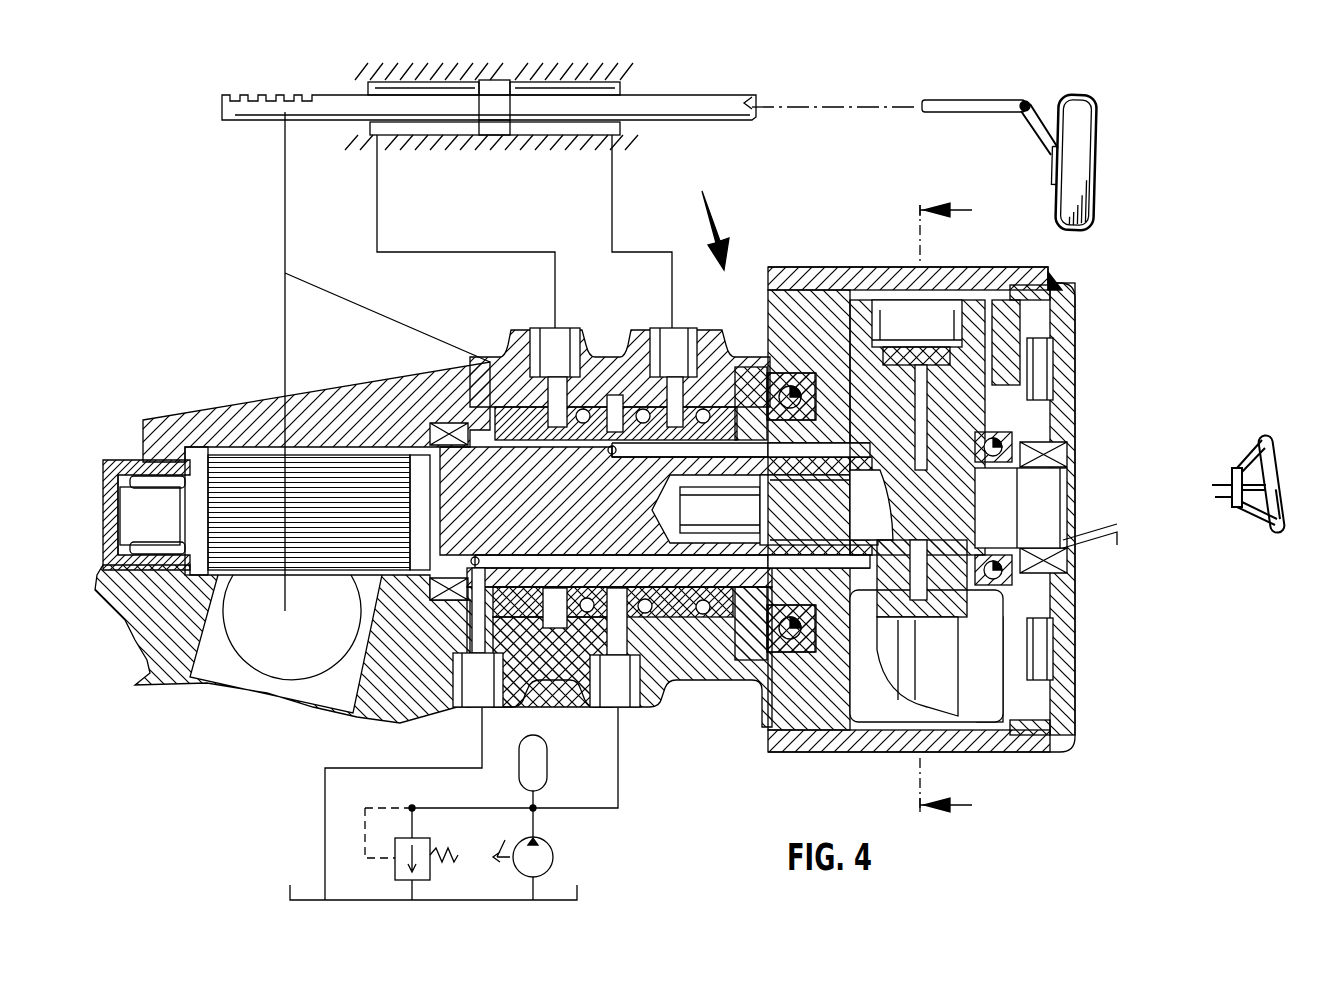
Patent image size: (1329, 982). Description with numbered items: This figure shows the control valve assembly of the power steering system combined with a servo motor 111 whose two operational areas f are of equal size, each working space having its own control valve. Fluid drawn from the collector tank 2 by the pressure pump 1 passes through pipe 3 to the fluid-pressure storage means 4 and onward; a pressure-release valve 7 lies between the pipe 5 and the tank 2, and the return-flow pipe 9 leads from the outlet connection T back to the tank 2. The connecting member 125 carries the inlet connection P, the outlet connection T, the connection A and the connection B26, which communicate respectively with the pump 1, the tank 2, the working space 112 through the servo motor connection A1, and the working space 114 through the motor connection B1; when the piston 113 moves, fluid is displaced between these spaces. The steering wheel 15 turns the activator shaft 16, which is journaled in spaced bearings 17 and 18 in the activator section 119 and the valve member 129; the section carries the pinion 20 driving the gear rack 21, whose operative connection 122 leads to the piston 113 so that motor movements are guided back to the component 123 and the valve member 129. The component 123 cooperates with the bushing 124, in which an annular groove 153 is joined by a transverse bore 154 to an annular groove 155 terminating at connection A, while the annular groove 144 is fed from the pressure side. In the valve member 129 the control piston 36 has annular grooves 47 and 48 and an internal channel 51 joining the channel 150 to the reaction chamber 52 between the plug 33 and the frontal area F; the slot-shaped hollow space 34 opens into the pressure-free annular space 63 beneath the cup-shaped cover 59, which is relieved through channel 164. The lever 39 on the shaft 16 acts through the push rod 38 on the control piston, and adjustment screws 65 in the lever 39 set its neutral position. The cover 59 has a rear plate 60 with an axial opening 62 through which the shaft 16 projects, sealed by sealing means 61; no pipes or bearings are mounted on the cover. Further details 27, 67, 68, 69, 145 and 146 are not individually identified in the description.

The servo motor 111 is at (608, 48).
The working space 112 is at (618, 86).
The piston 113 is at (504, 60).
The working space 114 is at (365, 85).
The fixed guide f is at (466, 80).
The lower support pad B1 is at (380, 138).
The connection means A1 is at (626, 134).
The operative connection 122 is at (283, 157).
The bushing 124 is at (513, 420).
The activator section 119 is at (590, 477).
The connecting member 125 is at (627, 380).
The connection means B26 is at (563, 361).
The annular groove 155 is at (662, 365).
The connection means A is at (700, 350).
The transverse bore 154 is at (697, 380).
The annular groove 153 is at (700, 407).
The channel 150 is at (770, 370).
The bearing ring 27 is at (780, 410).
The cover 59 is at (805, 375).
The annular groove 47 is at (883, 423).
The reaction chamber 52 is at (900, 400).
The plug 33 is at (908, 395).
The pipe 5 is at (953, 498).
The frontal area F is at (937, 390).
The rear plate 60 is at (1063, 328).
The control piston 36 is at (960, 412).
The channel 51 is at (930, 425).
The bearing 17 is at (1042, 435).
The annular groove 48 is at (1017, 462).
The axial opening 62 is at (965, 492).
The activator shaft 16 is at (1100, 510).
The steering wheel 15 is at (1268, 460).
The sealing means 61 is at (1073, 545).
The push rod 38 is at (1002, 570).
The lever 39 is at (977, 587).
The annular space 63 is at (1000, 690).
The adjustment screws 65 is at (933, 583).
The slot-shaped hollow space 34 is at (813, 563).
The channel 164 is at (823, 622).
The valve member 129 is at (895, 716).
The bearing 18 is at (725, 533).
The component 123 is at (565, 510).
The pinion gear 20 is at (247, 467).
The gear rack 21 is at (257, 645).
The outlet connection means T is at (476, 708).
The inlet connection means P is at (621, 709).
The tank passage 69 is at (456, 705).
The housing flange 67 is at (410, 692).
The housing bore 68 is at (470, 677).
The annular groove 144 is at (543, 680).
The passage 145 is at (578, 668).
The passage 146 is at (543, 713).
The return-flow pipe 9 is at (395, 770).
The pressure-release valve 7 is at (425, 852).
The pressure pump 1 is at (553, 857).
The pipe 3 is at (542, 828).
The fluid-pressure storage means 4 is at (547, 768).
The collector tank 2 is at (313, 905).